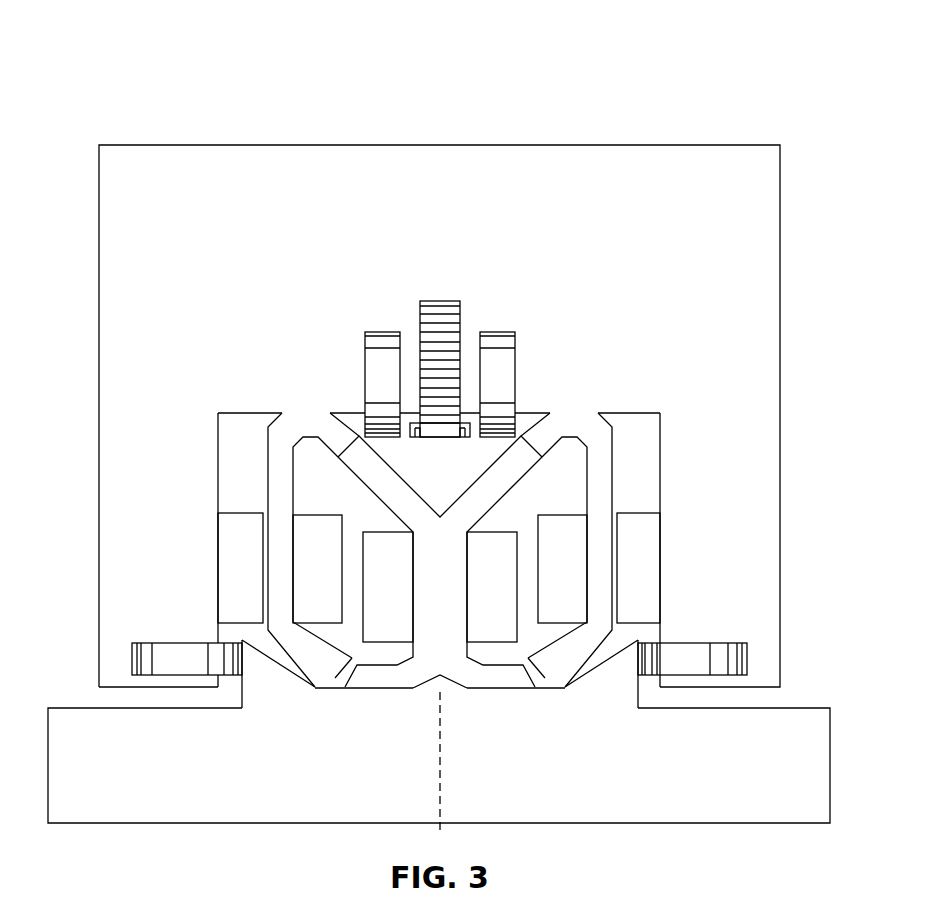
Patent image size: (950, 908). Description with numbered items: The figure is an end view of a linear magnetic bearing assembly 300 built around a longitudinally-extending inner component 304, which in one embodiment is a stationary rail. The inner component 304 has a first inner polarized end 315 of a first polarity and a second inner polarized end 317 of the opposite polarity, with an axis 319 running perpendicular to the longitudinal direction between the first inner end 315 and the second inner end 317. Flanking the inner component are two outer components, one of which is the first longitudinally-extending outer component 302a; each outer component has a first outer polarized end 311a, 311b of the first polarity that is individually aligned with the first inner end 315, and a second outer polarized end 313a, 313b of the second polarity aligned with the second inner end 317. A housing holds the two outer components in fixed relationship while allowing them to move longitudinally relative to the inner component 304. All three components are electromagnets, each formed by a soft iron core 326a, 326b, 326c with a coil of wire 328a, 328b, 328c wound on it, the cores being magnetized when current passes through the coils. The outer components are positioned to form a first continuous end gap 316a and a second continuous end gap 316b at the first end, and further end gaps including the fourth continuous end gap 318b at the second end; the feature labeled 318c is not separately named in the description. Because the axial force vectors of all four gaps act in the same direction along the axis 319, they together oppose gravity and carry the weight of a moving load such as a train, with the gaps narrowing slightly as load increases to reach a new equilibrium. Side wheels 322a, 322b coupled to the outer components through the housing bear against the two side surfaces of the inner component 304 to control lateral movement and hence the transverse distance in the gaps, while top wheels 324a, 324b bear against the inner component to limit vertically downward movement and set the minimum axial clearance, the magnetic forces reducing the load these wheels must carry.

The linear magnetic bearing assembly 300 is at (868, 69).
The first longitudinally-extending outer component 302a is at (247, 474).
The longitudinally-extending inner component 304 is at (493, 699).
The first outer polarized end 311a is at (310, 428).
The first outer polarized end 311b is at (582, 423).
The second outer polarized end 313a is at (330, 666).
The second outer polarized end 313b is at (556, 656).
The first inner polarized end 315 is at (540, 445).
The first continuous end gap 316a is at (362, 436).
The second continuous end gap 316b is at (533, 430).
The second inner polarized end 317 is at (409, 690).
The fourth continuous end gap 318b is at (538, 660).
The first lower flexure arm 318c is at (317, 657).
The axis 319 is at (447, 760).
The side wheel 322a is at (157, 660).
The side wheel 322b is at (740, 665).
The top wheel 324a is at (387, 330).
The top wheel 324b is at (503, 343).
The soft iron core 326a is at (280, 540).
The soft iron core 326b is at (600, 497).
The soft iron core 326c is at (430, 625).
The coil of wire 328a is at (237, 563).
The coil of wire 328b is at (648, 556).
The coil of wire 328c is at (385, 557).